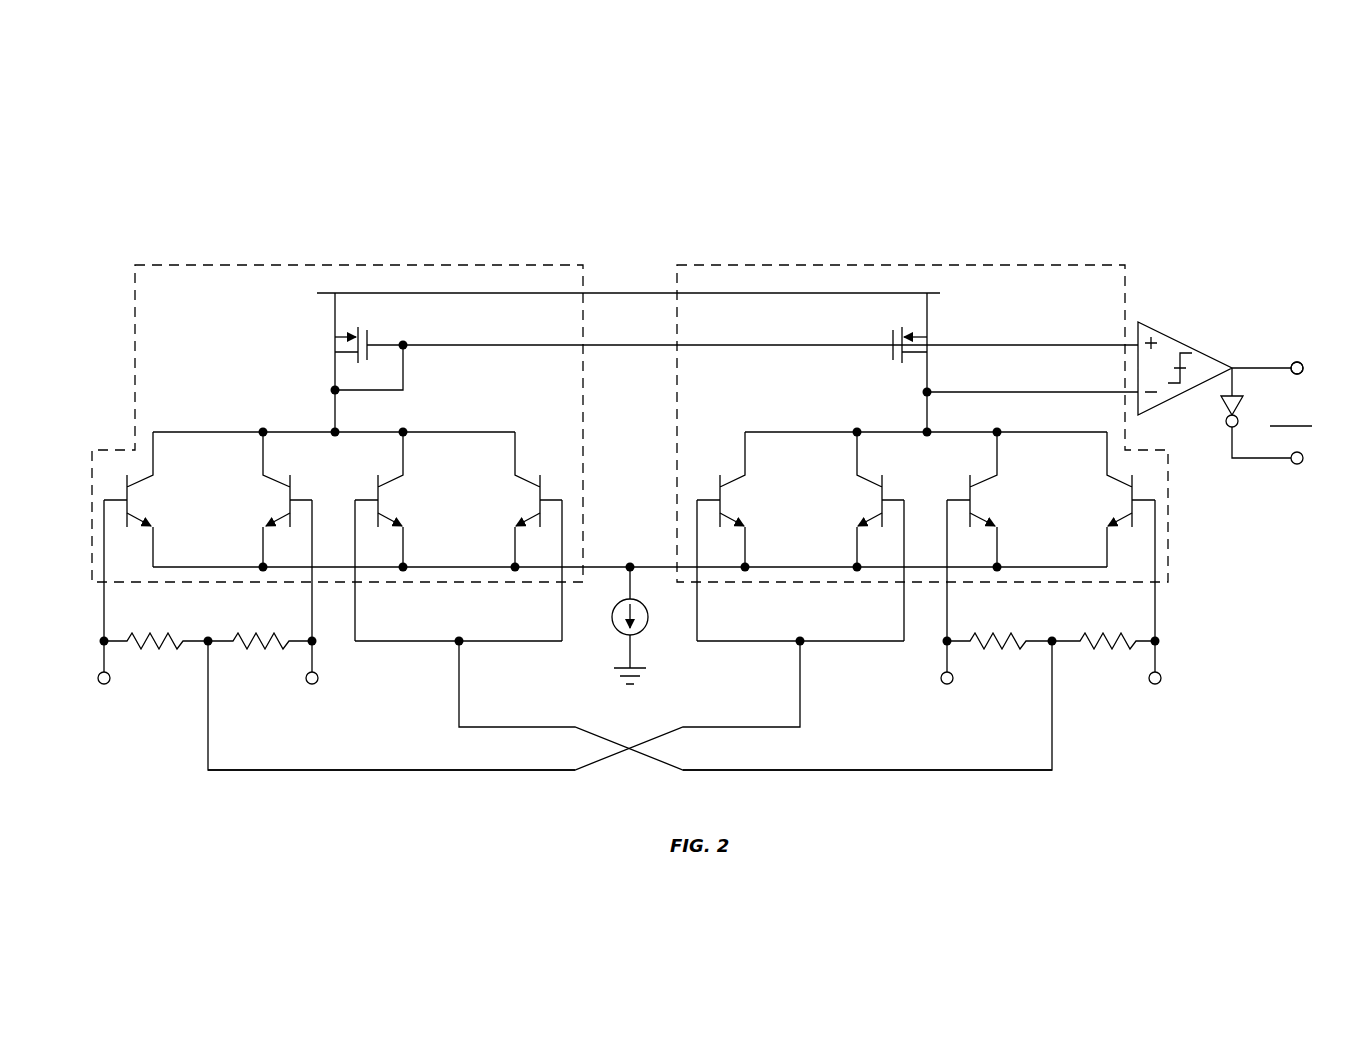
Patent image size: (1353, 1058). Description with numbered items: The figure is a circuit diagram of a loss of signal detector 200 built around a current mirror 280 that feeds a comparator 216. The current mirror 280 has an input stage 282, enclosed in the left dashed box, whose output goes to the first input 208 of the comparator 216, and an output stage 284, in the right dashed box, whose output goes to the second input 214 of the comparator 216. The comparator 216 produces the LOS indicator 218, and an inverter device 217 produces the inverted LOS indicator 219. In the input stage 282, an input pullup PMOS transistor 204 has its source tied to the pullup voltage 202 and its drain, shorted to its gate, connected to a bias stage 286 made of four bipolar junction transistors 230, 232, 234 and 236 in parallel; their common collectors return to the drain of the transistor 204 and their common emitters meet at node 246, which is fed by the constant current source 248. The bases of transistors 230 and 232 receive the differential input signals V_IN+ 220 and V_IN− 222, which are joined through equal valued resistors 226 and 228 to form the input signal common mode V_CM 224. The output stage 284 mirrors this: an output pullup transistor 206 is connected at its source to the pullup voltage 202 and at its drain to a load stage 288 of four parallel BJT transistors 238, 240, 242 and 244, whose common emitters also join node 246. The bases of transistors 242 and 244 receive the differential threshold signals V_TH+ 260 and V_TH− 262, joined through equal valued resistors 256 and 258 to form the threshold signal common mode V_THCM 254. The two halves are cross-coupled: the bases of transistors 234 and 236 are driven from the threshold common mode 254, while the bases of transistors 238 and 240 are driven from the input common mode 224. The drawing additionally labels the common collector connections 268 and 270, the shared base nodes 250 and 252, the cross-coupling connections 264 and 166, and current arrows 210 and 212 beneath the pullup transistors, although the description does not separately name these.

The LOS detector 200 is at (1288, 190).
The pullup voltage 202 is at (562, 293).
The input pullup PMOS transistor 204 is at (372, 334).
The output pullup transistor 206 is at (890, 334).
The first input V_D1 208 is at (1012, 343).
The first current 210 is at (321, 421).
The second current 212 is at (914, 421).
The second input V_D2 214 is at (1012, 391).
The comparator 216 is at (1194, 346).
The inverter device 217 is at (1244, 398).
The LOS indicator 218 is at (1303, 371).
The inverted LOS indicator 219 is at (1303, 461).
The differential input signal V_IN+ 220 is at (98, 674).
The differential input signal V_IN− 222 is at (318, 674).
The input signal common mode V_CM 224 is at (211, 644).
The resistor 226 is at (175, 634).
The resistor 228 is at (246, 634).
The bipolar junction transistor 230 is at (127, 477).
The bipolar junction transistor 232 is at (291, 479).
The bipolar junction transistor 234 is at (378, 477).
The bipolar junction transistor 236 is at (542, 482).
The BJT transistor 238 is at (719, 482).
The BJT transistor 240 is at (883, 479).
The BJT transistor 242 is at (970, 477).
The BJT transistor 244 is at (1133, 477).
The node 246 is at (636, 558).
The constant current source 248 is at (644, 632).
The first base node 250 is at (462, 640).
The second base node 252 is at (800, 640).
The threshold signal common mode V_THCM 254 is at (1055, 644).
The resistor 256 is at (1016, 634).
The resistor 258 is at (1090, 634).
The differential threshold signal V_TH+ 260 is at (1162, 674).
The differential threshold signal V_TH− 262 is at (942, 674).
The common mode connection wire 264 is at (320, 770).
The threshold common mode connection wire 166 is at (942, 770).
The first collector node 268 is at (338, 430).
The second collector node 270 is at (930, 430).
The current mirror 280 is at (666, 260).
The input stage 282 is at (431, 265).
The output stage 284 is at (776, 265).
The bias stage 286 is at (528, 440).
The load stage 288 is at (732, 440).